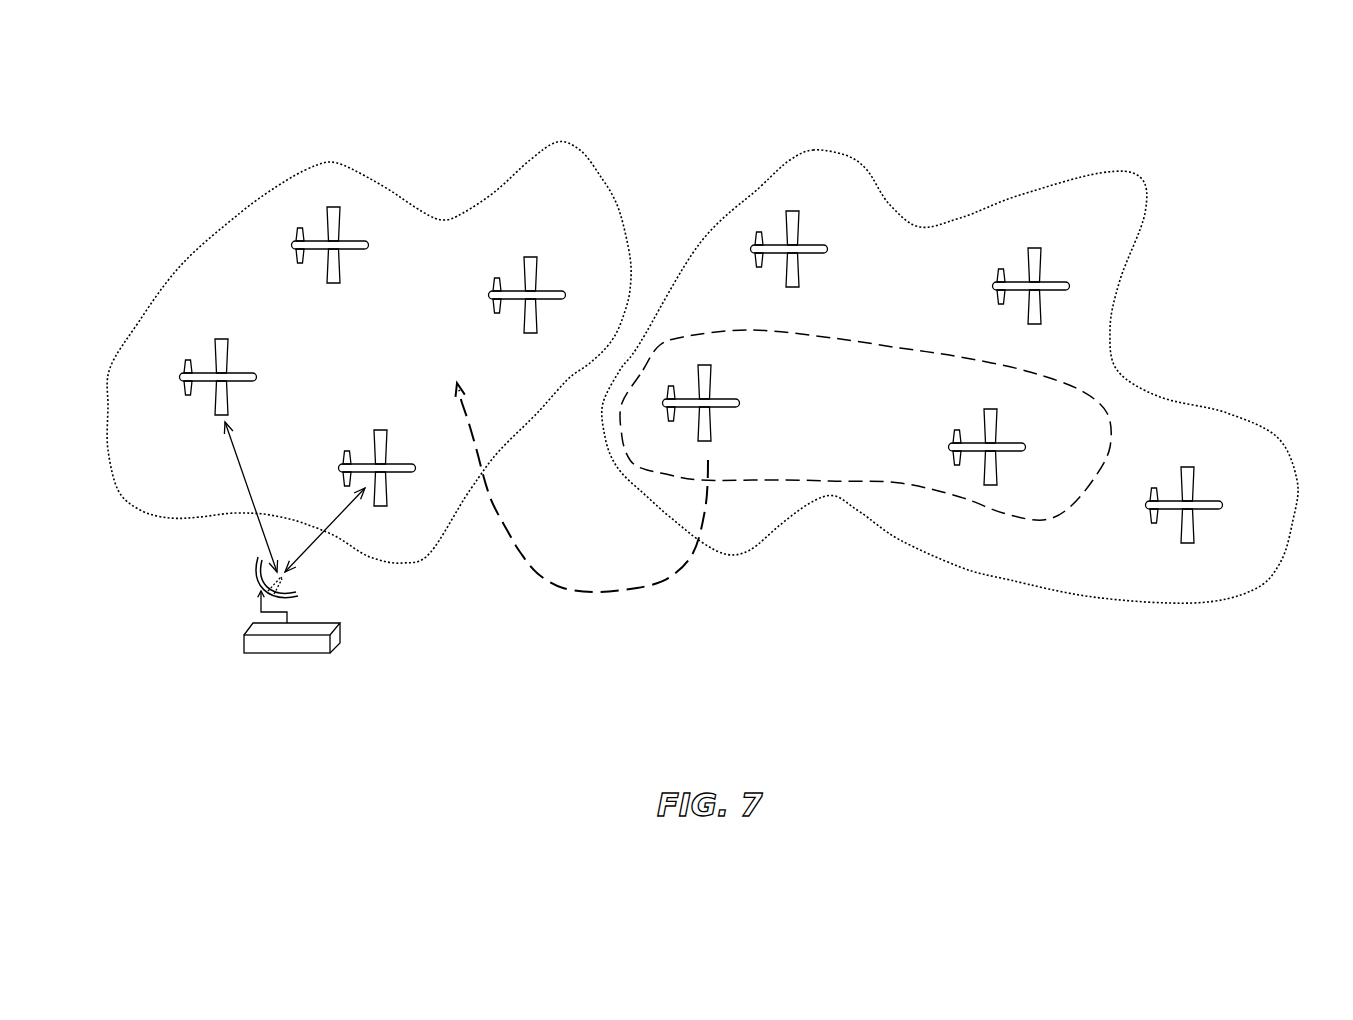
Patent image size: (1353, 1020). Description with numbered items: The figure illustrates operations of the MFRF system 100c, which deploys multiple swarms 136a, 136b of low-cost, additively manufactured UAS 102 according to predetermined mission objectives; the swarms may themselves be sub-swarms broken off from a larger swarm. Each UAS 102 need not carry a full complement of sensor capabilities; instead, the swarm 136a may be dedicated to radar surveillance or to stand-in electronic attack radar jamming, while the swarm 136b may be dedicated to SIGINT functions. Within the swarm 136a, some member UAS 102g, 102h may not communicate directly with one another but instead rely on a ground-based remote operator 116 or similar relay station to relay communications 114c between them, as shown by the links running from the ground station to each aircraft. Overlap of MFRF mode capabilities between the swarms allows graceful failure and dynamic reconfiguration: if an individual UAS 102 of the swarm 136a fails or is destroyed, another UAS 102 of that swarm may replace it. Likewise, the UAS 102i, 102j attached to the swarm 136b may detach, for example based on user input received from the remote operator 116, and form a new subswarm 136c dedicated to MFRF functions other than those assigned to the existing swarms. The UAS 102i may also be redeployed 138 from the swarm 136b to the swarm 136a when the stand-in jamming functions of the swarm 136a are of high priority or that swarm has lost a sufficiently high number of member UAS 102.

The MFRF system 100c is at (192, 117).
The UAS 102 is at (528, 256).
The UAS 102g is at (220, 340).
The UAS 102h is at (378, 431).
The UAS 102i is at (725, 397).
The UAS 102j is at (990, 410).
The communications 114c is at (235, 457).
The remote operator 116 is at (342, 635).
The swarm 136a is at (338, 166).
The swarm 136b is at (1103, 173).
The subswarm 136c is at (888, 477).
The redeployment 138 is at (515, 552).